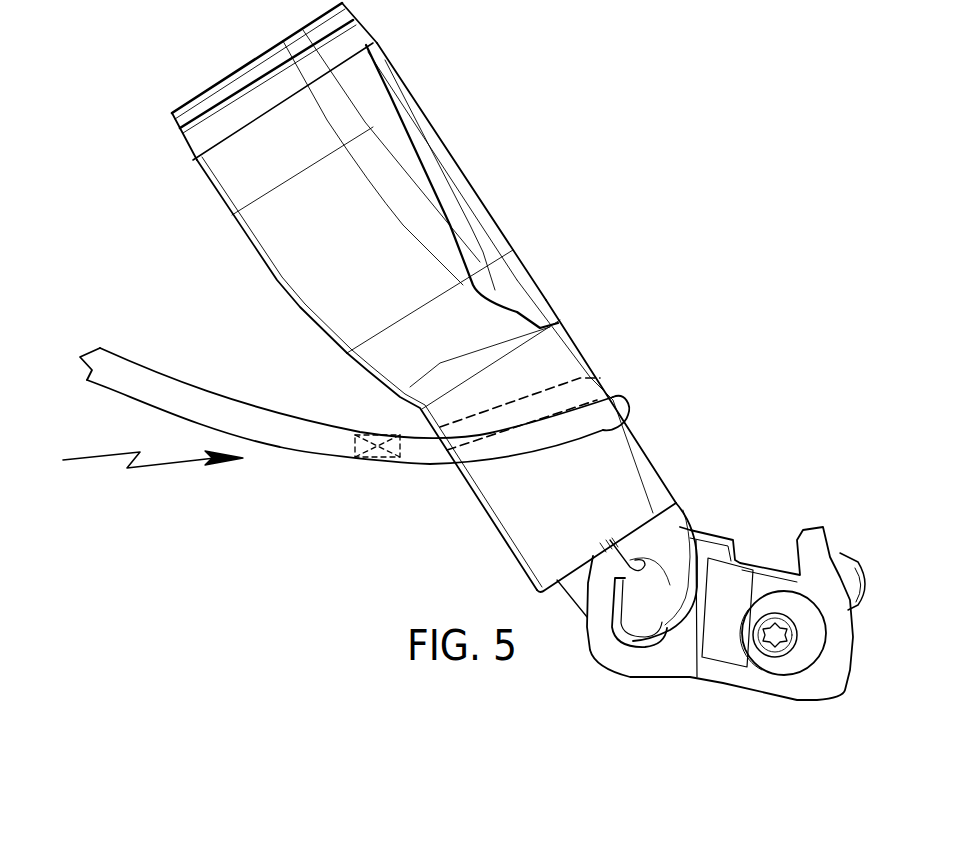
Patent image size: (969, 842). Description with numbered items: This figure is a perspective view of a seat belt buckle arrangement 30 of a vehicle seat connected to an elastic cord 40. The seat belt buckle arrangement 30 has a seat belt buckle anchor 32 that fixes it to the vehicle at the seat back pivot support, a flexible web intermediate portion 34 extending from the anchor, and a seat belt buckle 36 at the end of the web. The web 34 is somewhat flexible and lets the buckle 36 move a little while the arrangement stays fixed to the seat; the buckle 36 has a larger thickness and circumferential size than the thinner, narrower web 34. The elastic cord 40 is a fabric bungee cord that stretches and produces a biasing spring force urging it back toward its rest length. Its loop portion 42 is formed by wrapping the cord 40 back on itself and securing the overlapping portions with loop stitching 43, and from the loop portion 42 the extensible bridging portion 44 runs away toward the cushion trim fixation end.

The seat belt buckle arrangement 30 is at (762, 466).
The seat belt buckle anchor 32 is at (807, 642).
The flexible web intermediate portion 34 is at (567, 517).
The seat belt buckle 36 is at (443, 210).
The elastic cord 40 is at (133, 462).
The loop portion 42 is at (613, 397).
The loop stitching 43 is at (370, 457).
The bridging portion 44 is at (208, 407).